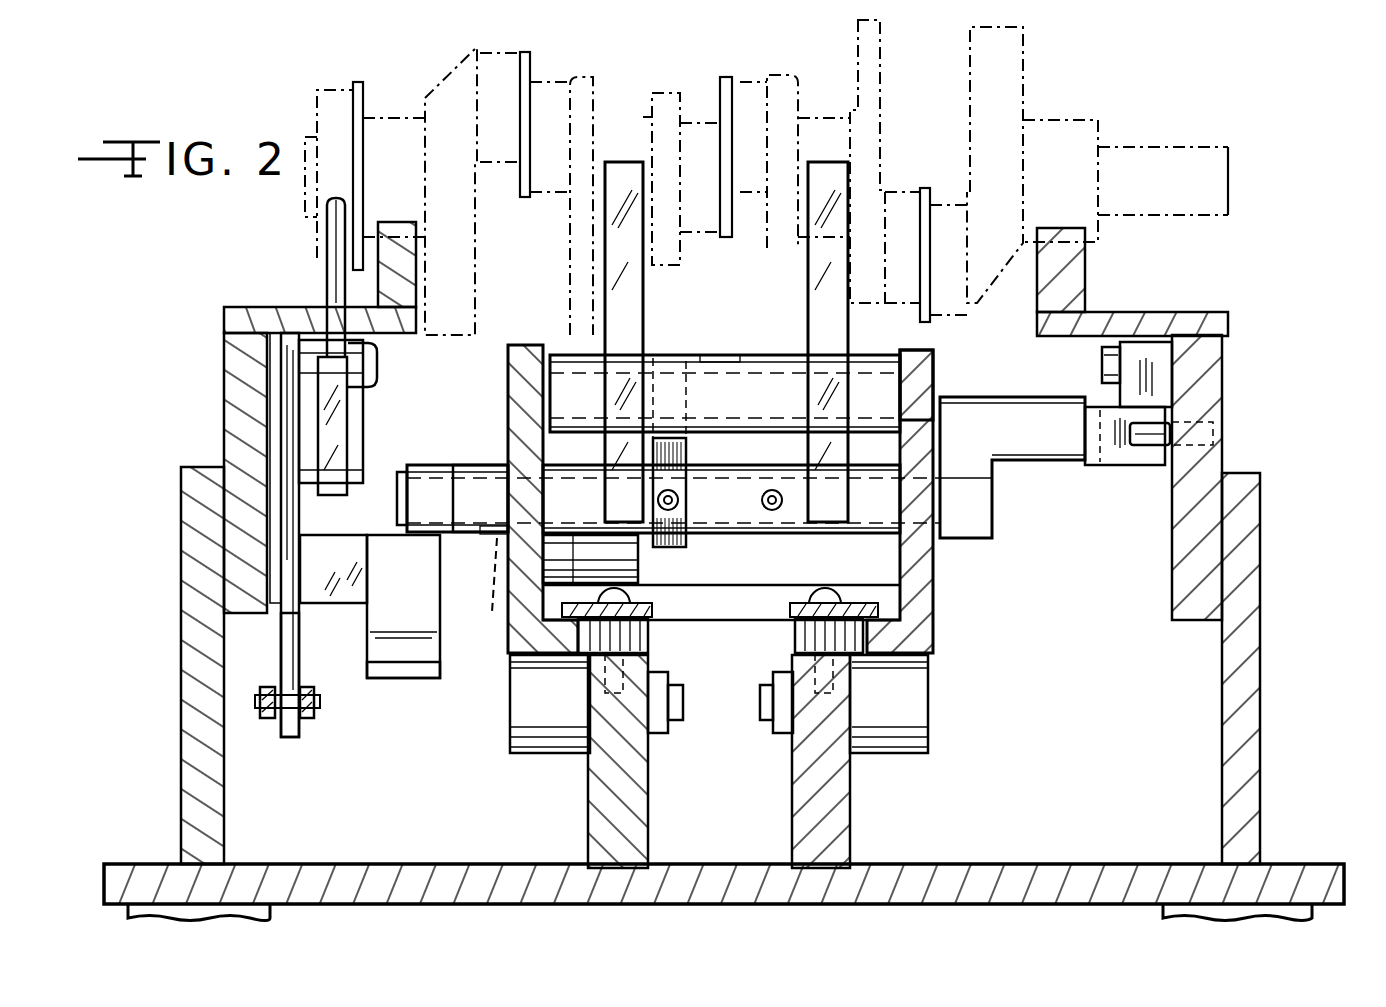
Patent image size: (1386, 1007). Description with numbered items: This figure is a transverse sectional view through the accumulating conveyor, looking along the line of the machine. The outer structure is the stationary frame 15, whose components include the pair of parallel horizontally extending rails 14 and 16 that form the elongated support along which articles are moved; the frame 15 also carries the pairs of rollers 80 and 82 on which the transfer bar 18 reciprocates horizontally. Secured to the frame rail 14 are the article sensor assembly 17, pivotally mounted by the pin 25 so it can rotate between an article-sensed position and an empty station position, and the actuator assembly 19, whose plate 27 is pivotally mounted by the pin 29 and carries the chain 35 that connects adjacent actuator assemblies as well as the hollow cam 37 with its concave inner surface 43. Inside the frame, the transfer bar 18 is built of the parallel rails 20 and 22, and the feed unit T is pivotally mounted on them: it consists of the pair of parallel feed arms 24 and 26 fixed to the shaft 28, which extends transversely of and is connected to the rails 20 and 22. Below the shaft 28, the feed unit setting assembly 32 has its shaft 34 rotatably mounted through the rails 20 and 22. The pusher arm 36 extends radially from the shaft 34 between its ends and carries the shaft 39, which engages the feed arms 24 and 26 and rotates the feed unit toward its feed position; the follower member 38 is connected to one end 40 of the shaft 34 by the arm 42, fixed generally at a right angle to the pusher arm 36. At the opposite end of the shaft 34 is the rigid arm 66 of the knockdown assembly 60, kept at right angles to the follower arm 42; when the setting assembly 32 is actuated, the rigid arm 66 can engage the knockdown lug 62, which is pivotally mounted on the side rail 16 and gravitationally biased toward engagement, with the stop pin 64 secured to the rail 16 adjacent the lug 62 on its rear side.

The rail 14 is at (224, 355).
The stationary frame 15 is at (1266, 766).
The rail 16 is at (1228, 387).
The article sensor assembly 17 is at (327, 270).
The transfer bar 18 is at (936, 366).
The actuator assembly 19 is at (287, 738).
The rail 20 is at (510, 413).
The rail 22 is at (933, 558).
The feed arm 24 is at (627, 275).
The pin 25 is at (363, 422).
The feed arm 26 is at (820, 283).
The plate 27 is at (280, 660).
The shaft 28 is at (763, 405).
The pin 29 is at (267, 394).
The feed unit setting assembly 32 is at (487, 540).
The shaft 34 is at (717, 498).
The chain 35 is at (318, 706).
The pusher arm 36 is at (676, 450).
The hollow cam 37 is at (376, 679).
The follower member 38 is at (420, 493).
The shaft 39 is at (723, 350).
The end of the shaft 40 is at (480, 593).
The arm 42 is at (476, 482).
The concave inner surface 43 is at (418, 625).
The knockdown assembly 60 is at (1153, 475).
The knockdown lug 62 is at (1108, 462).
The stop pin 64 is at (1145, 424).
The rigid arm 66 is at (1035, 452).
The rollers 80 is at (523, 708).
The rollers 82 is at (790, 630).
The feed unit T is at (658, 338).